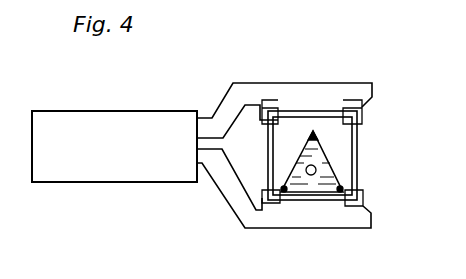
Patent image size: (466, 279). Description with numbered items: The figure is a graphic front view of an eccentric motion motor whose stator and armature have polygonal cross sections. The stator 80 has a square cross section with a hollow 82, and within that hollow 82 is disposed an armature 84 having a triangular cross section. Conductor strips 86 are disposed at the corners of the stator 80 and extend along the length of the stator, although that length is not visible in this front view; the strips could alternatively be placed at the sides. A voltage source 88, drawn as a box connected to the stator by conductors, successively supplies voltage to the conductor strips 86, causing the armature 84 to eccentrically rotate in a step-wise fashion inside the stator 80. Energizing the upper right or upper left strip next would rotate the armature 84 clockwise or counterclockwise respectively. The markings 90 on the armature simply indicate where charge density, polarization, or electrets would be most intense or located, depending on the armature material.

The stator 80 is at (356, 148).
The hollow 82 is at (344, 134).
The armature 84 is at (348, 187).
The conductor strips 86 is at (347, 107).
The voltage source 88 is at (127, 183).
The markings 90 is at (333, 203).